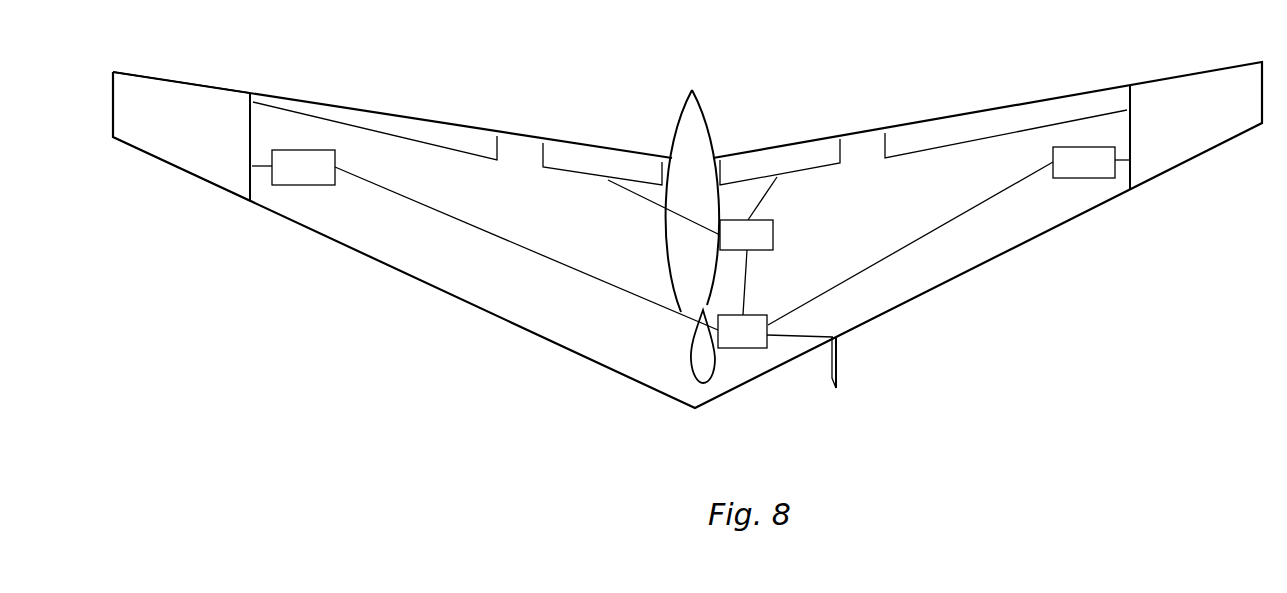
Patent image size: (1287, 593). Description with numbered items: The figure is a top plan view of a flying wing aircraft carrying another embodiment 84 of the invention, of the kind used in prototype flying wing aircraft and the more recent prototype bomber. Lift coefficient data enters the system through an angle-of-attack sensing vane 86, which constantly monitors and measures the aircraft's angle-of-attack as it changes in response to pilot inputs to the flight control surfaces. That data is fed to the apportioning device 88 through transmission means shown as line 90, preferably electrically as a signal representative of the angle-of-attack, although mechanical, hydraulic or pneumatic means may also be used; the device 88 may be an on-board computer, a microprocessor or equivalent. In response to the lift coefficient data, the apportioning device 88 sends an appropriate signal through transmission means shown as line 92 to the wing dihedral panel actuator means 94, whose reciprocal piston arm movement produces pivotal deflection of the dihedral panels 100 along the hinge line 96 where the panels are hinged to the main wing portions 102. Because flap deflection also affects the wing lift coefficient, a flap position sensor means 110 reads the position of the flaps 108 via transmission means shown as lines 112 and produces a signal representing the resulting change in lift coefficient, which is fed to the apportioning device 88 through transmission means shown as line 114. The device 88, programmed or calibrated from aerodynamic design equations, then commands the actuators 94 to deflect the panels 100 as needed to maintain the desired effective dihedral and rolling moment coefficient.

The embodiment 84 is at (463, 345).
The angle-of-attack sensing vane 86 is at (840, 358).
The apportioning device 88 is at (752, 348).
The transmission means 90 is at (793, 335).
The transmission means 92 is at (400, 195).
The wing dihedral panel actuator means 94 is at (302, 185).
The hinge line 96 is at (252, 139).
The dihedral panels 100 is at (208, 157).
The main wing portions 102 is at (440, 263).
The flaps 108 is at (600, 162).
The flap position sensor means 110 is at (773, 233).
The transmission means 112 is at (648, 203).
The transmission means 114 is at (747, 273).